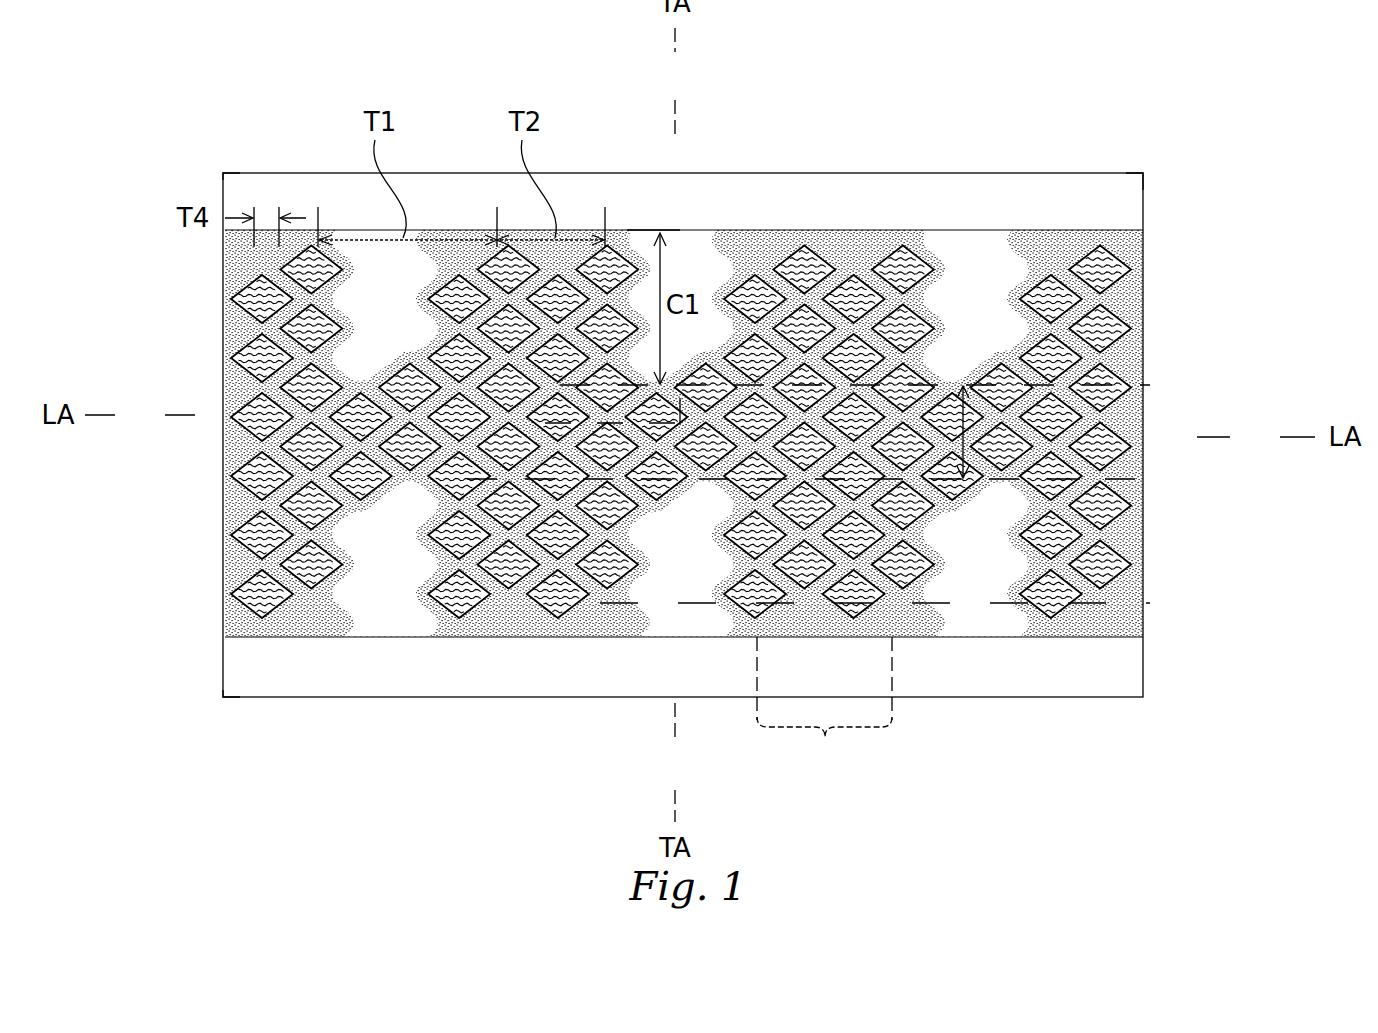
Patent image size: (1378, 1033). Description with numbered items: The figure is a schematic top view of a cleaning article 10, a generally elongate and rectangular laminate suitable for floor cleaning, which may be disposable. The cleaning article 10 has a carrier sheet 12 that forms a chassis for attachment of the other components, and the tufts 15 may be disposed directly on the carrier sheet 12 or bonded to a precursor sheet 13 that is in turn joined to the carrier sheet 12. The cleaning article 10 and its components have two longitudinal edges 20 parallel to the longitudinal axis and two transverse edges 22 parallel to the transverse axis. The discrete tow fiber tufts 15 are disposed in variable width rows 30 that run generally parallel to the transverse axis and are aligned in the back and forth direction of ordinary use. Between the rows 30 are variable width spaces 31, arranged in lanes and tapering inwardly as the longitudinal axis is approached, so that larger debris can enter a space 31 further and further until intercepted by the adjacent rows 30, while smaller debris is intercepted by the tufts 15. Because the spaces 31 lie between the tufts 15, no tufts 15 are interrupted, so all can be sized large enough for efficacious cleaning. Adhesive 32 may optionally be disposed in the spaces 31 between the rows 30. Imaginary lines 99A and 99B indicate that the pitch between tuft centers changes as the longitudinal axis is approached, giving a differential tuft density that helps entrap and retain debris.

The cleaning article 10 is at (678, 436).
The carrier sheet 12 is at (678, 443).
The precursor sheet 13 is at (1120, 292).
The tufts 15 is at (240, 291).
The longitudinal edges 20 is at (900, 173).
The transverse edges 22 is at (1148, 188).
The rows 30 is at (824, 706).
The spaces 31 is at (1040, 246).
The adhesive 32 is at (342, 755).
The imaginary line 99A is at (1150, 603).
The imaginary line 99B is at (1172, 479).